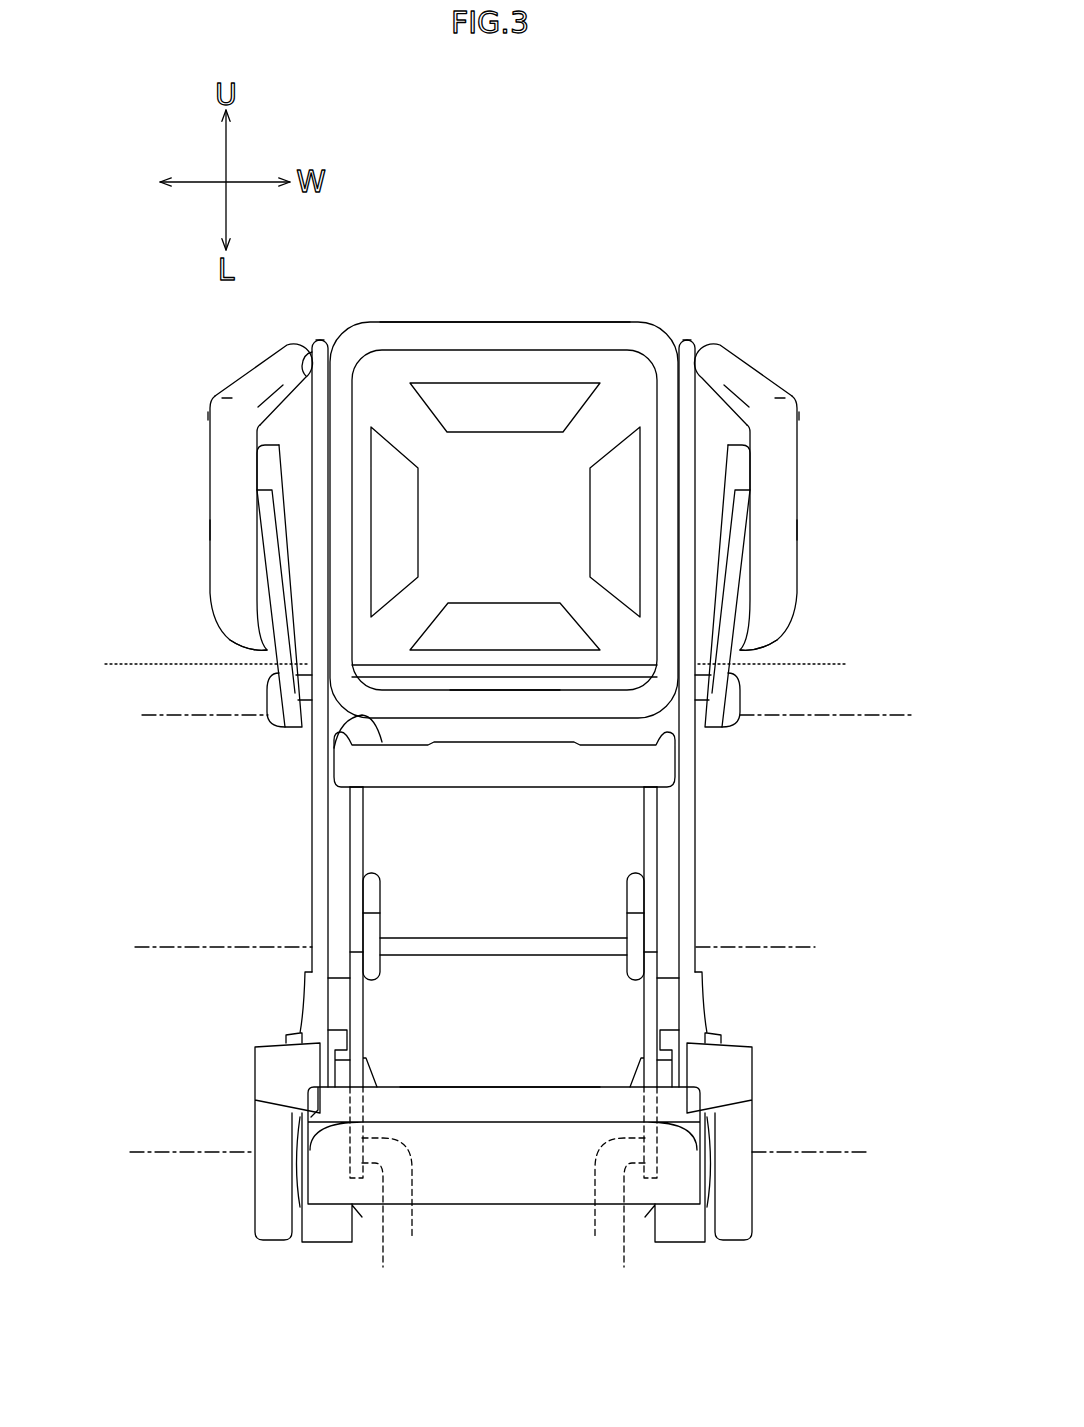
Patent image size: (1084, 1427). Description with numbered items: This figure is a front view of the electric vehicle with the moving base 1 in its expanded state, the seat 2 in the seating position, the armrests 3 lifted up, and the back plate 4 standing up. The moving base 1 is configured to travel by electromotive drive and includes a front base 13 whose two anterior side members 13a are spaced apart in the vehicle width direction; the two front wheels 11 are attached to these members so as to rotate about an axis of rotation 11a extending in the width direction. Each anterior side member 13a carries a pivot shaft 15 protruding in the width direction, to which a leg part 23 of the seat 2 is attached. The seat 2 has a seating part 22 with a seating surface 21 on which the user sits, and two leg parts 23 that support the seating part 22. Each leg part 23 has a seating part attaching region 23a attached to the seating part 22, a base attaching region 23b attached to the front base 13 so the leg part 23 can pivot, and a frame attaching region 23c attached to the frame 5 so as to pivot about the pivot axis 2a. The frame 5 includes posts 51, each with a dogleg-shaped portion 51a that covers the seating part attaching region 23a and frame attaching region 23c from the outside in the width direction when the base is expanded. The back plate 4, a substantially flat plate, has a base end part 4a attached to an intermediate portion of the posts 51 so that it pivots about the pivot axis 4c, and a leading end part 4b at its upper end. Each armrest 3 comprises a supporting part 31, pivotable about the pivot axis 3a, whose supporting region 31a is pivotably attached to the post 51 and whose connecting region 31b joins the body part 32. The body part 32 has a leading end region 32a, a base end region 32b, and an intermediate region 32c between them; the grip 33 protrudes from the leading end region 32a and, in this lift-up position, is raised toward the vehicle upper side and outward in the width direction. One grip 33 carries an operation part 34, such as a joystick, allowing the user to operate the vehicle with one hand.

The moving base 1 is at (484, 1072).
The seat 2 is at (603, 801).
The pivot axis 2a is at (150, 945).
The armrest 3 is at (192, 445).
The pivot axis 3a is at (900, 713).
The back plate 4 is at (588, 310).
The base end part 4a is at (496, 705).
The leading end part 4b is at (490, 330).
The pivot axis 4c is at (105, 662).
The frame 5 is at (709, 318).
The front wheel 11 is at (268, 1228).
The axis of rotation 11a is at (840, 1150).
The front base 13 is at (493, 1190).
The anterior side member 13a is at (327, 1225).
The pivot shaft 15 is at (400, 1160).
The seating surface 21 is at (350, 718).
The seating part 22 is at (660, 765).
The leg part 23 is at (357, 895).
The seating part attaching region 23a is at (355, 792).
The base attaching region 23b is at (370, 1200).
The frame attaching region 23c is at (370, 940).
The supporting part 31 is at (277, 590).
The supporting region 31a is at (268, 704).
The connecting region 31b is at (266, 512).
The body part 32 is at (218, 468).
The leading end region 32a is at (224, 403).
The base end region 32b is at (235, 633).
The intermediate region 32c is at (216, 527).
The grip 33 is at (262, 380).
The operation part 34 is at (305, 350).
The post 51 is at (320, 340).
The dogleg-shaped portion 51a is at (315, 962).